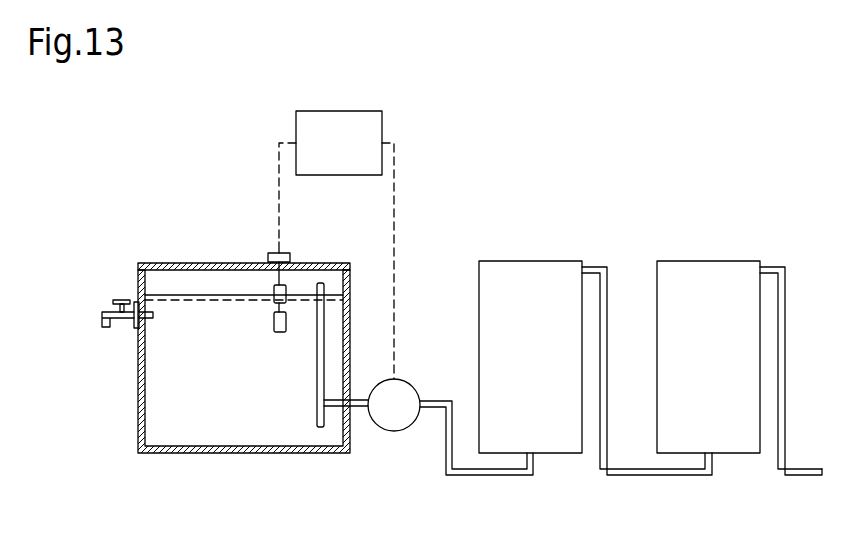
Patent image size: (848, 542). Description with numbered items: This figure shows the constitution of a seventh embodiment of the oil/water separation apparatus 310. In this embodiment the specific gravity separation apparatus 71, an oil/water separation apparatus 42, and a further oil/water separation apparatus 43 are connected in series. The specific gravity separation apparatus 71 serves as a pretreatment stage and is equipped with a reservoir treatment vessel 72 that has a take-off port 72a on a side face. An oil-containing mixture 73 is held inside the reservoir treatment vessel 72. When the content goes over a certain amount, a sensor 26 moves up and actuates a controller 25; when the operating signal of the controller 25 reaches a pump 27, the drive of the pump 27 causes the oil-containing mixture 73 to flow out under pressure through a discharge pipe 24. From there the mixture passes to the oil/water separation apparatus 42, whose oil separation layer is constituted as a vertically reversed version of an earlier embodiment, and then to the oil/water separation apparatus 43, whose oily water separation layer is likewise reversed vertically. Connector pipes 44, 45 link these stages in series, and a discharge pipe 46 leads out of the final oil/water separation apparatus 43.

The oil/water separation apparatus 310 is at (460, 148).
The discharge pipe 24 is at (318, 379).
The controller 25 is at (308, 121).
The sensor 26 is at (287, 318).
The pump 27 is at (390, 422).
The oil/water separation apparatus 42 is at (557, 270).
The oil/water separation apparatus 43 is at (707, 272).
The connector pipe 44 is at (500, 476).
The connector pipe 45 is at (645, 476).
The discharge pipe 46 is at (785, 287).
The specific gravity separation apparatus 71 is at (183, 263).
The reservoir treatment vessel 72 is at (140, 378).
The take-off port 72a is at (103, 313).
The oil-containing mixture 73 is at (175, 425).